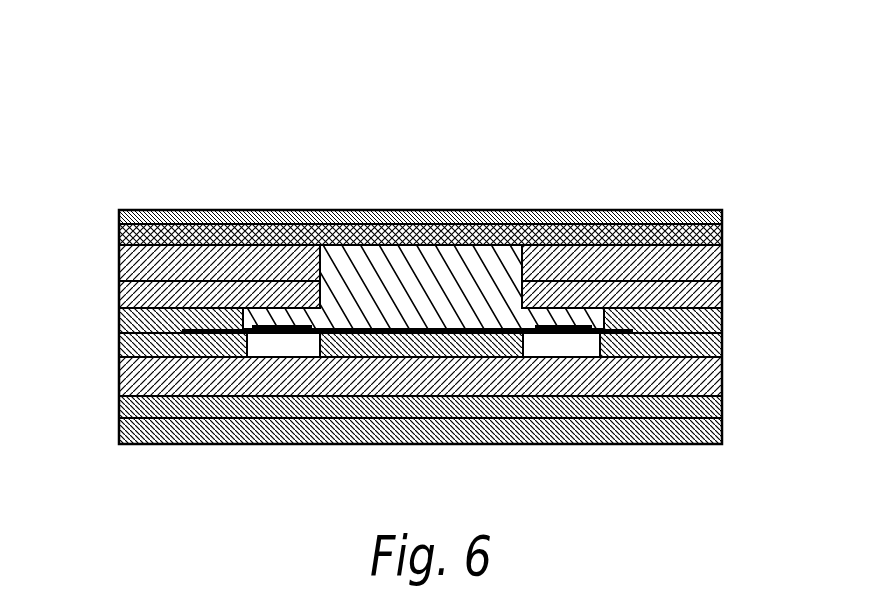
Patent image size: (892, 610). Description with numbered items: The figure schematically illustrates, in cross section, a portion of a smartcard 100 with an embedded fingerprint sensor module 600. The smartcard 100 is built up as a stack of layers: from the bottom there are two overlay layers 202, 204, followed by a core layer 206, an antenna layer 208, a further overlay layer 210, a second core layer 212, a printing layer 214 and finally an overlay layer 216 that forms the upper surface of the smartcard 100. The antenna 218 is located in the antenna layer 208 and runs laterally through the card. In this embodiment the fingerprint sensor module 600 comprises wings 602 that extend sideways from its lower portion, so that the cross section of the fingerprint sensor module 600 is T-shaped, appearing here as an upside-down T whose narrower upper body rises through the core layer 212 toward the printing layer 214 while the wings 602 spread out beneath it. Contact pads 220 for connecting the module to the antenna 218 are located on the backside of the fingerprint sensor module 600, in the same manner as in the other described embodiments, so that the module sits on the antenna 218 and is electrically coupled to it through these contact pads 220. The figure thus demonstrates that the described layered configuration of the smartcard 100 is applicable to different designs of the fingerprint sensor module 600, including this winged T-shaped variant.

The smartcard 100 is at (186, 142).
The overlay layer 202 is at (119, 433).
The overlay layer 204 is at (119, 406).
The core layer 206 is at (119, 375).
The antenna layer 208 is at (119, 343).
The overlay layer 210 is at (119, 312).
The core layer 212 is at (119, 272).
The printing layer 214 is at (119, 243).
The overlay layer 216 is at (119, 217).
The antenna 218 is at (633, 334).
The contact pads 220 is at (283, 334).
The fingerprint sensor module 600 is at (348, 272).
The wings 602 is at (283, 317).